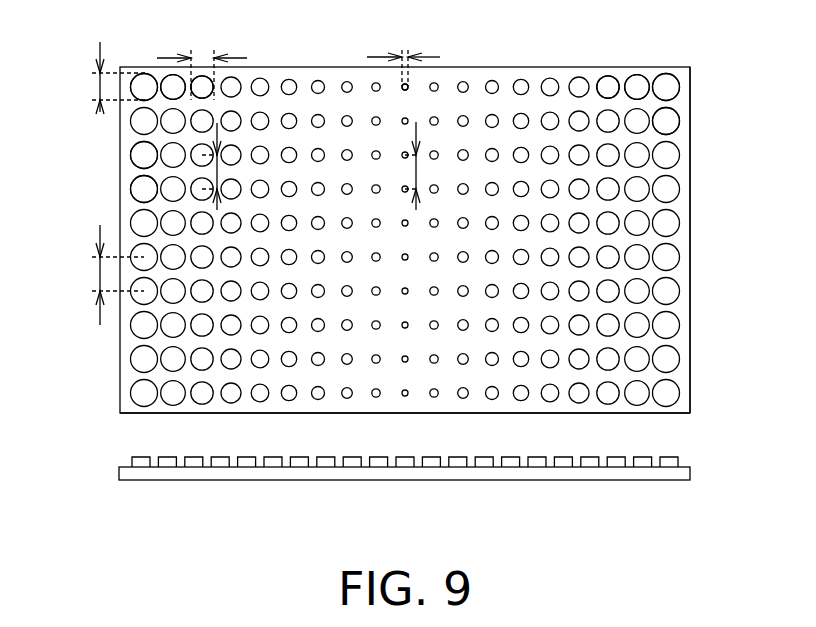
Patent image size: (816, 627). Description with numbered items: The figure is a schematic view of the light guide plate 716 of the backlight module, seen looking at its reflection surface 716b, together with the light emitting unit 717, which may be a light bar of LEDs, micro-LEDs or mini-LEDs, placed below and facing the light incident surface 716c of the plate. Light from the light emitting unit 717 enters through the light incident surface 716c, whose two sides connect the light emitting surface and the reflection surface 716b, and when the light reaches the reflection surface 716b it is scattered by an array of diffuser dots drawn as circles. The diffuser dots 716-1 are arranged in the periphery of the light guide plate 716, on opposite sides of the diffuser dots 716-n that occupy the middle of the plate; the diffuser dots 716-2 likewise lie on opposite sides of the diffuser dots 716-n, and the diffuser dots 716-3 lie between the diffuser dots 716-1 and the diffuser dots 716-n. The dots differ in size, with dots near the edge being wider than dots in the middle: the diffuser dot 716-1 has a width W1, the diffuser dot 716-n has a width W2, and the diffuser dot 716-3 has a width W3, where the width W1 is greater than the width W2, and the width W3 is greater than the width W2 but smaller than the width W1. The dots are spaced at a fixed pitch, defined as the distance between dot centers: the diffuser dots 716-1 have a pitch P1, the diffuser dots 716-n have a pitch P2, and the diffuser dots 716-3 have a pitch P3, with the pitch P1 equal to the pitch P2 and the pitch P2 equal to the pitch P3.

The light guide plate 716 is at (133, 67).
The diffuser dots 716-1 is at (144, 87).
The diffuser dots 716-2 is at (173, 87).
The diffuser dots 716-3 is at (204, 88).
The diffuser dots 716-n is at (407, 87).
The reflection surface 716b is at (676, 308).
The light incident surface 716c is at (652, 413).
The light emitting unit 717 is at (690, 470).
The width W1 is at (102, 78).
The width W2 is at (403, 55).
The width W3 is at (202, 63).
The pitch P1 is at (106, 275).
The pitch P2 is at (416, 170).
The pitch P3 is at (217, 172).